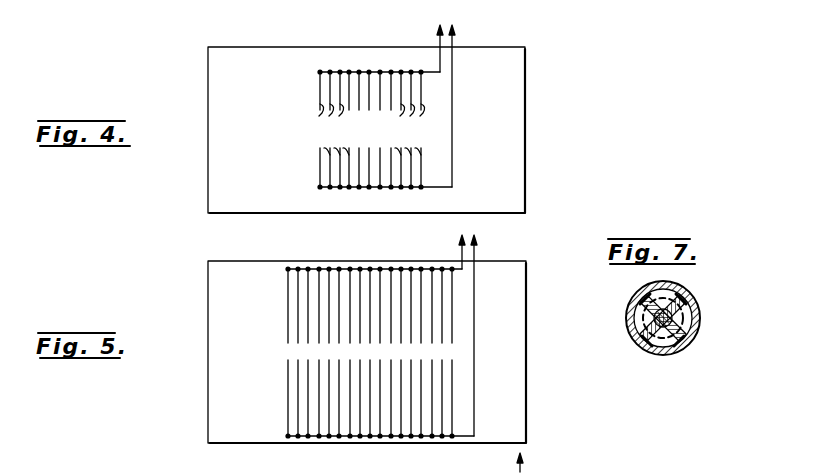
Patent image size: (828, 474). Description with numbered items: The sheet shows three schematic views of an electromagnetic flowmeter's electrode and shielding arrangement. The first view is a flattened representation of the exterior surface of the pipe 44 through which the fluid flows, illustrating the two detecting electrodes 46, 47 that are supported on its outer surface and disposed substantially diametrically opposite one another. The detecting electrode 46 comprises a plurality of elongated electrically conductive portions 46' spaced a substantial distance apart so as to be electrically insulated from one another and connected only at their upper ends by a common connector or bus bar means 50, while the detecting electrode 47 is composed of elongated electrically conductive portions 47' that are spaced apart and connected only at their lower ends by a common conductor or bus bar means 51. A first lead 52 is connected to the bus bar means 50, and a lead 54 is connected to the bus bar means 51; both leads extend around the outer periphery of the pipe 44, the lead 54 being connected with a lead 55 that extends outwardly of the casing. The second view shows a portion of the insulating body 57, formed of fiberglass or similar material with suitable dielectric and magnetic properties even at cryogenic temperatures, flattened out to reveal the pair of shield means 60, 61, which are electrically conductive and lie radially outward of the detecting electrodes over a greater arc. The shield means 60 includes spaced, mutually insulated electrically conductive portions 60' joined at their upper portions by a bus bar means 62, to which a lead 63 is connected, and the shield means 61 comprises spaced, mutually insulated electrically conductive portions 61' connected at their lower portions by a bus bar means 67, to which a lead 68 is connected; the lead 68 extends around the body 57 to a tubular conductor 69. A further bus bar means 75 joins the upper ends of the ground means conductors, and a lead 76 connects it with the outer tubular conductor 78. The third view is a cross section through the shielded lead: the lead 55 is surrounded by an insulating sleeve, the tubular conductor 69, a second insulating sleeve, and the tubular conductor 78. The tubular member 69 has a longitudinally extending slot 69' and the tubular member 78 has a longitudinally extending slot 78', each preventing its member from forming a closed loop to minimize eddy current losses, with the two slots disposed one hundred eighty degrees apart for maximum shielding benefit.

In FIG. 4, the pipe 44 is at (518, 118).
In FIG. 4, the detecting electrode 46 is at (337, 91).
In FIG. 4, the detecting electrode 47 is at (337, 167).
In FIG. 4, the electrically conductive portions 46' is at (361, 122).
In FIG. 4, the electrically conductive portions 47' is at (387, 139).
In FIG. 4, the bus bar means 50 is at (355, 72).
In FIG. 4, the bus bar means 51 is at (374, 188).
In FIG. 4, the first lead 52 is at (440, 52).
In FIG. 4, the lead 54 is at (452, 160).
In FIG. 5, the insulating body 57 is at (517, 407).
In FIG. 5, the shield means 60 is at (338, 306).
In FIG. 5, the shield means 61 is at (341, 398).
In FIG. 5, the electrically conductive portions 60' is at (274, 327).
In FIG. 5, the electrically conductive portions 61' is at (278, 376).
In FIG. 5, the bus bar means 62 is at (347, 268).
In FIG. 5, the bus bar means 67 is at (355, 437).
In FIG. 5, the lead 63 is at (462, 253).
In FIG. 5, the lead 68 is at (476, 318).
In FIG. 5, the bus bar means 75 is at (272, 472).
In FIG. 5, the lead 76 is at (522, 472).
In FIG. 7, the lead 55 is at (657, 352).
In FIG. 7, the tubular conductor 69 is at (693, 306).
In FIG. 7, the longitudinally extending slot 69' is at (635, 325).
In FIG. 7, the tubular conductor 78 is at (637, 320).
In FIG. 7, the longitudinally extending slot 78' is at (692, 318).